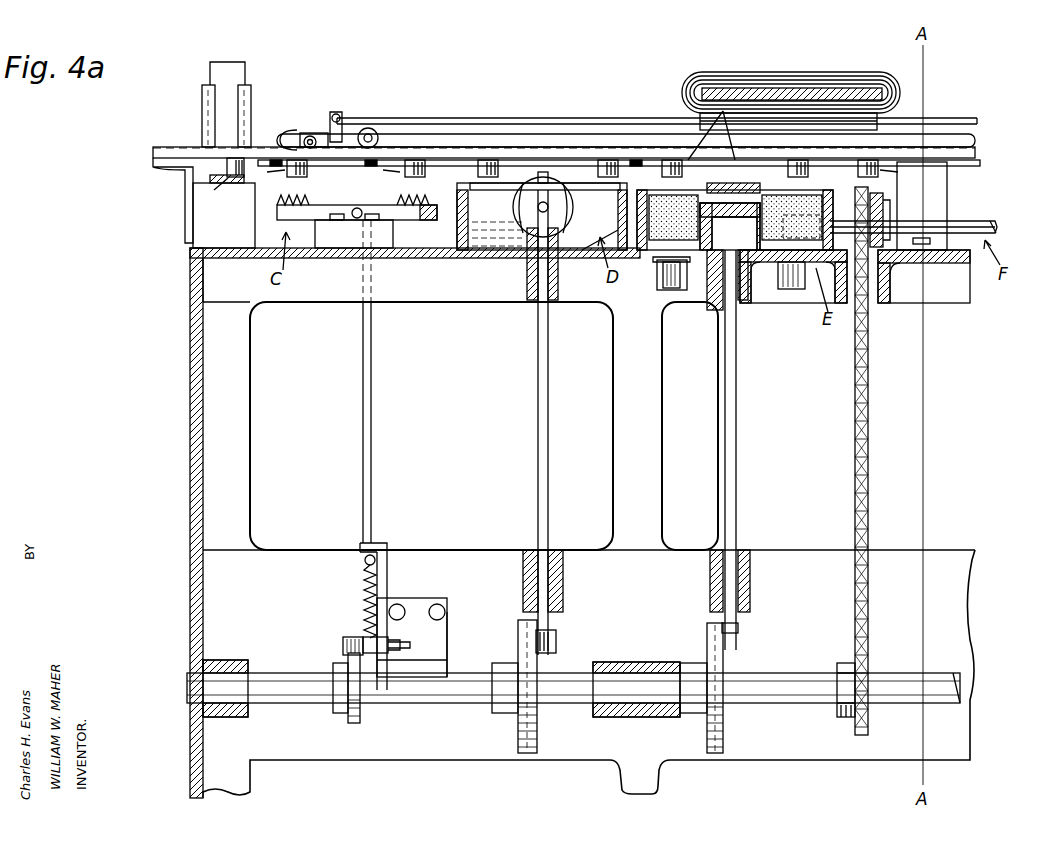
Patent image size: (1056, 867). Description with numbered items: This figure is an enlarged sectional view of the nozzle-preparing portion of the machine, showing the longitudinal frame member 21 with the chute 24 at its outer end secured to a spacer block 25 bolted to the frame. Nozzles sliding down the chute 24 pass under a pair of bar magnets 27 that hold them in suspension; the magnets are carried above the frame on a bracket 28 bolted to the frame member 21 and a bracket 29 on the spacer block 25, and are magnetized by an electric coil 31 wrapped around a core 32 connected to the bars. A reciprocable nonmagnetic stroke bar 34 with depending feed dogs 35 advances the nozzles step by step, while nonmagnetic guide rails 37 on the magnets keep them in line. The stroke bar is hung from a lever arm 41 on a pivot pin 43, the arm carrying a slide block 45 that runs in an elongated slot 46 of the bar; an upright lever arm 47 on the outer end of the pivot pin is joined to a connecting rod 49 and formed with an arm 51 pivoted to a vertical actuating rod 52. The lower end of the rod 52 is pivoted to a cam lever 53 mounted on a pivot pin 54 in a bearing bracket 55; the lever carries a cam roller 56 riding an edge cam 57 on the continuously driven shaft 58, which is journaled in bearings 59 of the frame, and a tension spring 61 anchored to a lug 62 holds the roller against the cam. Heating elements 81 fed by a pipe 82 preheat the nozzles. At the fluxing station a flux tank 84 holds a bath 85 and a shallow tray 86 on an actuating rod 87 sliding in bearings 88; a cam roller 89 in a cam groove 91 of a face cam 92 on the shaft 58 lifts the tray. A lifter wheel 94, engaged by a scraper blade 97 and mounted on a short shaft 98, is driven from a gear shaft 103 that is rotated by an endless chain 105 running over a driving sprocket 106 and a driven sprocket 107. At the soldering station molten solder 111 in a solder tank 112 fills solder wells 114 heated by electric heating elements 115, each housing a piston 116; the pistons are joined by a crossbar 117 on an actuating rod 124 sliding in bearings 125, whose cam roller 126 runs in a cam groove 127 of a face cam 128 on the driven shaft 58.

The longitudinal frame member 21 is at (190, 340).
The vertically curved chute 24 is at (225, 110).
The spacer block 25 is at (193, 233).
The bar magnets 27 is at (163, 147).
The bracket 28 is at (932, 189).
The bracket 29 is at (187, 201).
The electric coil 31 is at (825, 82).
The core 32 is at (752, 92).
The stroke bar 34 is at (492, 128).
The feed dogs 35 is at (275, 160).
The guide rails 37 is at (982, 165).
The lever arm 41 is at (311, 135).
The pivot pins 43 is at (334, 150).
The slide blocks 45 is at (290, 136).
The elongated slots 46 is at (412, 132).
The upright lever arm 47 is at (338, 110).
The connecting rod 49 is at (527, 120).
The arm 51 is at (367, 127).
The vertical actuating rod 52 is at (362, 371).
The cam lever 53 is at (366, 655).
The pivot pin 54 is at (418, 628).
The bearing bracket 55 is at (446, 618).
The cam roller 56 is at (343, 640).
The edge cam 57 is at (350, 725).
The driven shaft 58 is at (290, 705).
The bearings 59 is at (225, 666).
The tension spring 61 is at (363, 588).
The lug 62 is at (380, 545).
The heating elements 81 is at (285, 212).
The pipe 82 is at (352, 216).
The flux tank 84 is at (500, 250).
The flux bath 85 is at (478, 250).
The shallow tray 86 is at (470, 190).
The vertical actuating rod 87 is at (537, 389).
The slide bearings 88 is at (560, 275).
The cam roller 89 is at (556, 636).
The cam groove 91 is at (518, 637).
The face cam 92 is at (518, 735).
The lifter wheel 94 is at (575, 190).
The scraper blade 97 is at (545, 170).
The short shaft 98 is at (548, 207).
The gear shaft 103 is at (985, 220).
The endless chain 105 is at (855, 430).
The driving sprocket 106 is at (846, 666).
The driven sprocket 107 is at (880, 200).
The molten solder 111 is at (665, 278).
The solder tank 112 is at (785, 248).
The solder wells 114 is at (714, 295).
The electric heating elements 115 is at (668, 283).
The pistons 116 is at (662, 200).
The crossbar 117 is at (733, 190).
The vertical actuating rod 124 is at (737, 408).
The slide bearings 125 is at (713, 300).
The cam roller 126 is at (738, 645).
The cam groove 127 is at (700, 739).
The face cam 128 is at (722, 628).